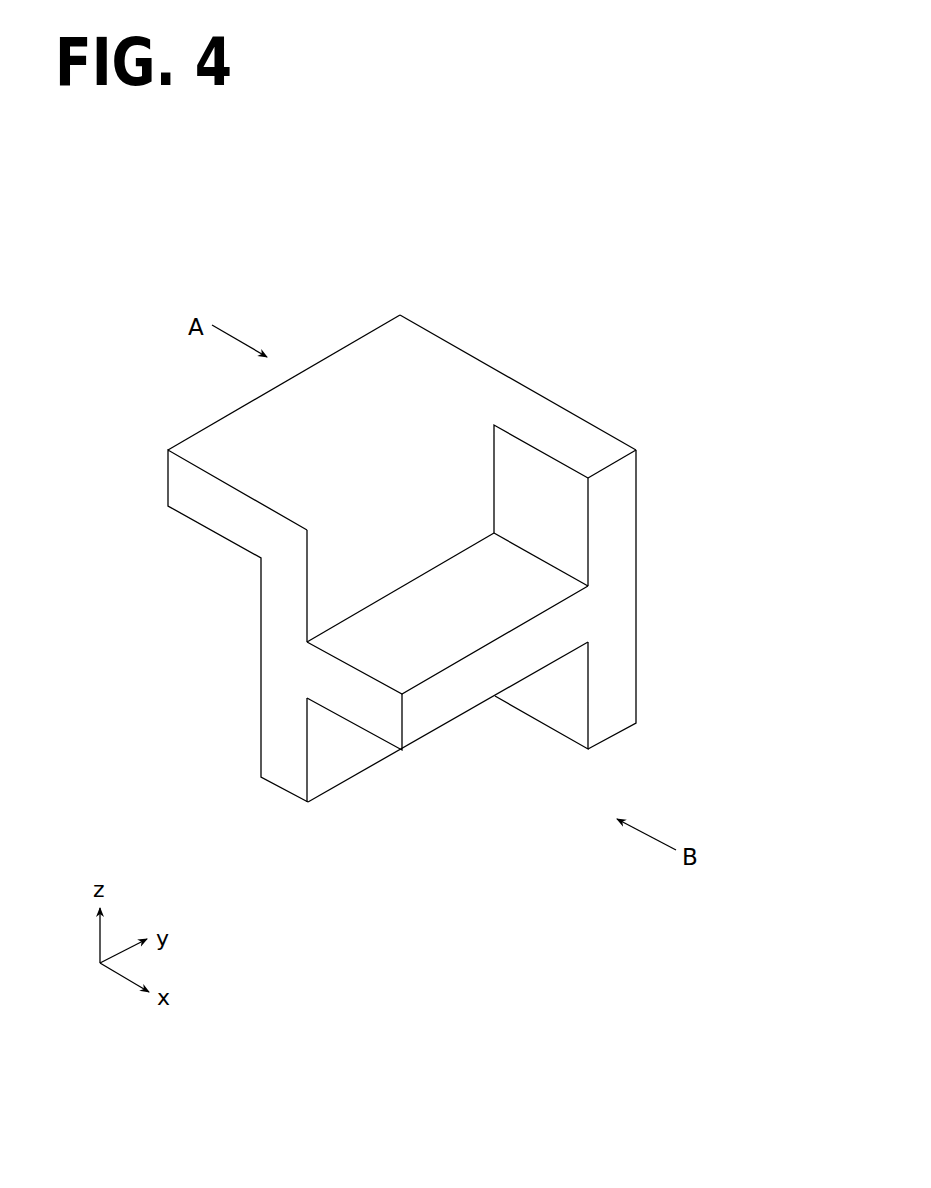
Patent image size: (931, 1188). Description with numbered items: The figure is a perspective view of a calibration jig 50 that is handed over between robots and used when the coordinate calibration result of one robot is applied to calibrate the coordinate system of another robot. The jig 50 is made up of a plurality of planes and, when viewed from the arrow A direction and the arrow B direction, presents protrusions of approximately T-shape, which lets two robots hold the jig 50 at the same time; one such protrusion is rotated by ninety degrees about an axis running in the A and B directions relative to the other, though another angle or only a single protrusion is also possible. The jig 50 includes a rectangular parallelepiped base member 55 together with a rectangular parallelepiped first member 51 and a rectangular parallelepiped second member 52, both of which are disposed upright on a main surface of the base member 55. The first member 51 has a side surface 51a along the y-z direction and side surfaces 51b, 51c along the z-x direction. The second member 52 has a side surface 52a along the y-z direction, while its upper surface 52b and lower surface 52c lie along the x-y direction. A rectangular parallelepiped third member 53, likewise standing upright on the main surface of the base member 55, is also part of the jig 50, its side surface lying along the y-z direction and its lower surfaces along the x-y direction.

The jig 50 is at (703, 263).
The first member 51 is at (621, 565).
The side surface 51a is at (616, 683).
The side surface 51b is at (573, 504).
The side surface 51c is at (562, 720).
The second member 52 is at (456, 708).
The side surface 52a is at (518, 658).
The upper surface 52b is at (541, 597).
The lower surface 52c is at (428, 735).
The third member 53 is at (165, 487).
The base member 55 is at (273, 750).